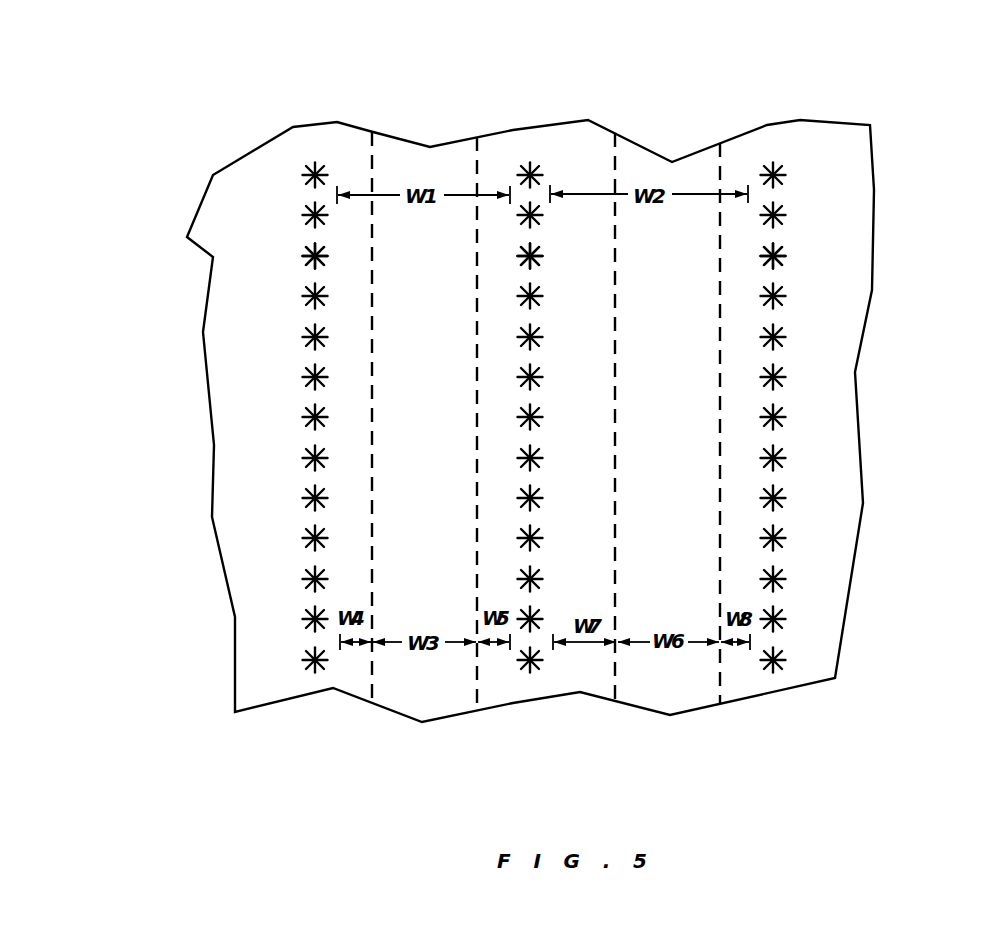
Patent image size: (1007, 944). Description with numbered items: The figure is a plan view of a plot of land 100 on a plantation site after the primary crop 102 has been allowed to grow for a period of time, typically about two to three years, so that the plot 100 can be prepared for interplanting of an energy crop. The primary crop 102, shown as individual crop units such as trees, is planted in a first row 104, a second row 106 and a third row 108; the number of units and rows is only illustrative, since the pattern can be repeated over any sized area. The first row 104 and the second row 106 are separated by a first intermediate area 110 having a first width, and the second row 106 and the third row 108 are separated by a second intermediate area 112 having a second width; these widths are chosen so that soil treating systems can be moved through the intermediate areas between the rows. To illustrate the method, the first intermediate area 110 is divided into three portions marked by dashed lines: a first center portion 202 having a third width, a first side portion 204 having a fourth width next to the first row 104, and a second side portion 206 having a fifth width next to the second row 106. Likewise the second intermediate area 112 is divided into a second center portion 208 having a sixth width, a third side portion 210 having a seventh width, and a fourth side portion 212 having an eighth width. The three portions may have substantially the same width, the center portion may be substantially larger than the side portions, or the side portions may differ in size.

The plot of land 100 is at (912, 93).
The primary crop 102 is at (307, 256).
The first row 104 is at (315, 150).
The second row 106 is at (528, 147).
The third row 108 is at (773, 147).
The first intermediate area 110 is at (510, 720).
The second intermediate area 112 is at (750, 720).
The first center portion 202 is at (477, 530).
The first side portion 204 is at (372, 518).
The second side portion 206 is at (510, 490).
The second center portion 208 is at (720, 530).
The third side portion 210 is at (615, 505).
The fourth side portion 212 is at (750, 488).